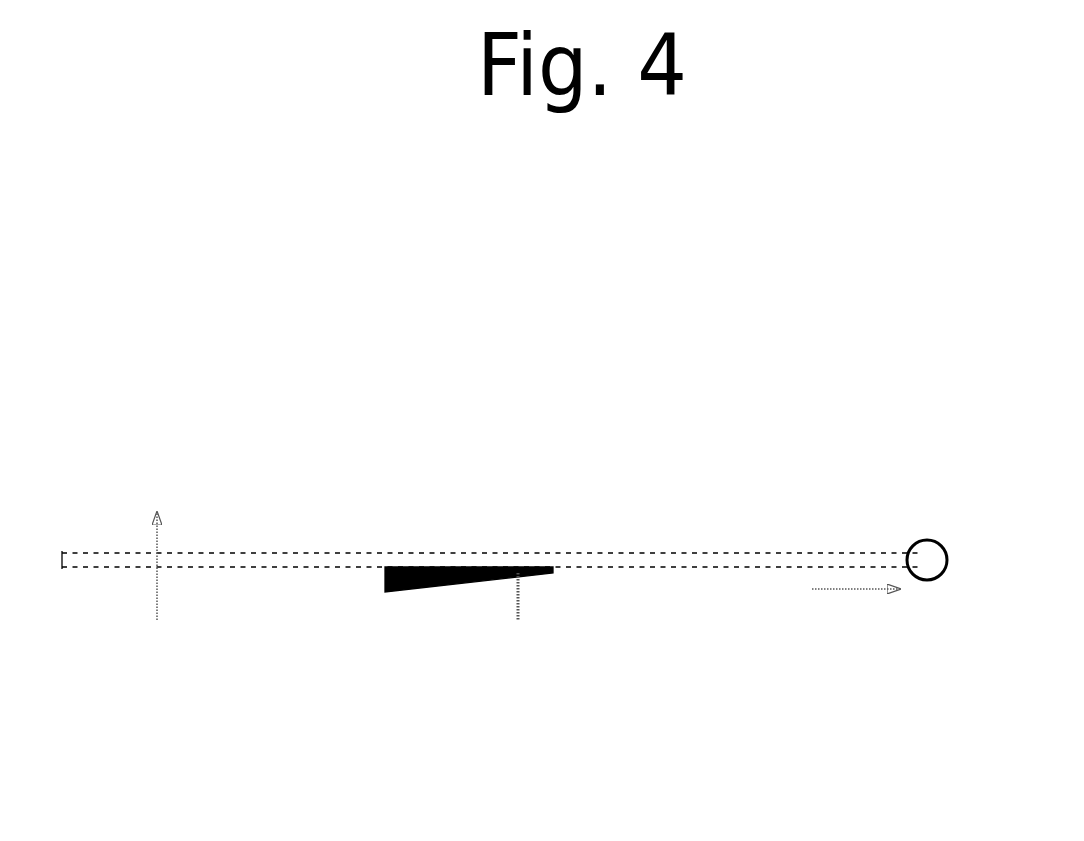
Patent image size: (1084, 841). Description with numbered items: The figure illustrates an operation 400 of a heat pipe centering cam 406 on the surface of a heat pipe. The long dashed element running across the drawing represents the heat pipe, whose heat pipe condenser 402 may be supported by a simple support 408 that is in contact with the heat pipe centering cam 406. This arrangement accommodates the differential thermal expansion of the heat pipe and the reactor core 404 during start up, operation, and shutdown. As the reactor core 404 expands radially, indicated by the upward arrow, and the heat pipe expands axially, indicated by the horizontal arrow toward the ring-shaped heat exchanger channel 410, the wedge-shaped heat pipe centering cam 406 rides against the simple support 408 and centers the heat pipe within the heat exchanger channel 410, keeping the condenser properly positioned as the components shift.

The operation 400 is at (240, 242).
The heat pipe condenser 402 is at (708, 540).
The reactor core 404 is at (108, 580).
The heat pipe centering cam 406 is at (400, 598).
The simple support 408 is at (513, 627).
The heat exchanger channel 410 is at (915, 600).